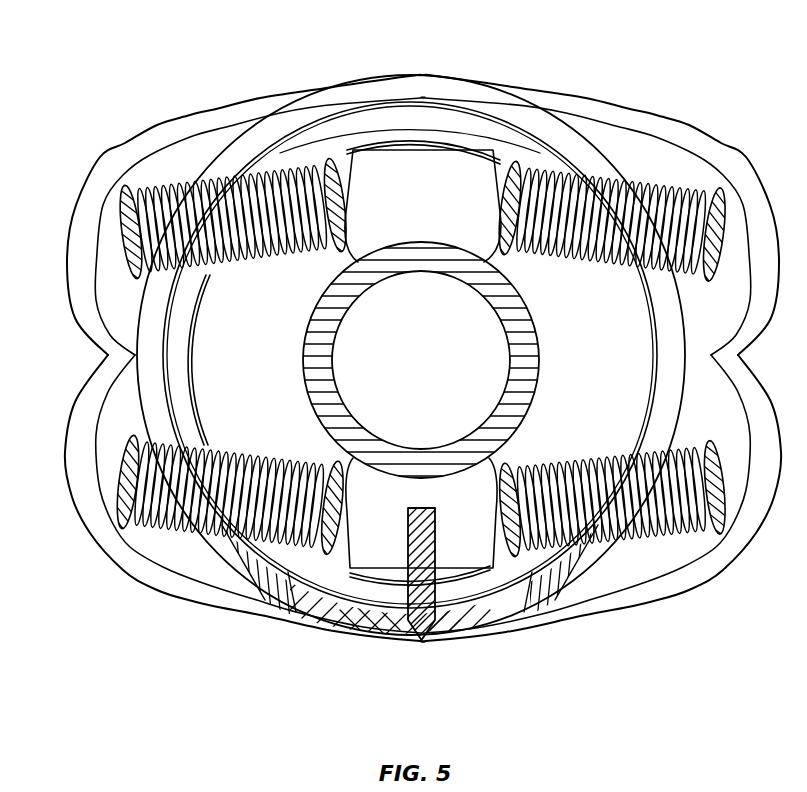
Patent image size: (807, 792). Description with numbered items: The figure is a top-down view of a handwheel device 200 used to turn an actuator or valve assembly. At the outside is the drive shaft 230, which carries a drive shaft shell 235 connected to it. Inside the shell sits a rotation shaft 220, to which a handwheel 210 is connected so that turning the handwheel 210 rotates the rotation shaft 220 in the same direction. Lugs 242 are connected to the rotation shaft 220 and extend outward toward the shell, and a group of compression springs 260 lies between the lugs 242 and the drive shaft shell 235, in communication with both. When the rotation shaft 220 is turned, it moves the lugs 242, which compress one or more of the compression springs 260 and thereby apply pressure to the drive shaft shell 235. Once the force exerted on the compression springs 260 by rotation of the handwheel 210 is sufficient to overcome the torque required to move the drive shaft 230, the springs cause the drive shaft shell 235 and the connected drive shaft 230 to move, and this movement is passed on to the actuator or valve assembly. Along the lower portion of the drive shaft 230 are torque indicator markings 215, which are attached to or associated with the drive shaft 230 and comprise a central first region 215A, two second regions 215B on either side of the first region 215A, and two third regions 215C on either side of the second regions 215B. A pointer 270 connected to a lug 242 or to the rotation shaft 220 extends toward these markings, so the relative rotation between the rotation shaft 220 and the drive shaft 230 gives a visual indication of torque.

The handwheel device 200 is at (122, 612).
The handwheel 210 is at (180, 402).
The torque indicator markings 215 is at (419, 645).
The first region 215A is at (377, 637).
The second regions 215B is at (302, 603).
The third regions 215C is at (238, 587).
The rotation shaft 220 is at (322, 345).
The drive shaft 230 is at (403, 90).
The drive shaft shell 235 is at (148, 128).
The lugs 242 is at (455, 205).
The compression springs 260 is at (695, 540).
The pointer 270 is at (463, 643).